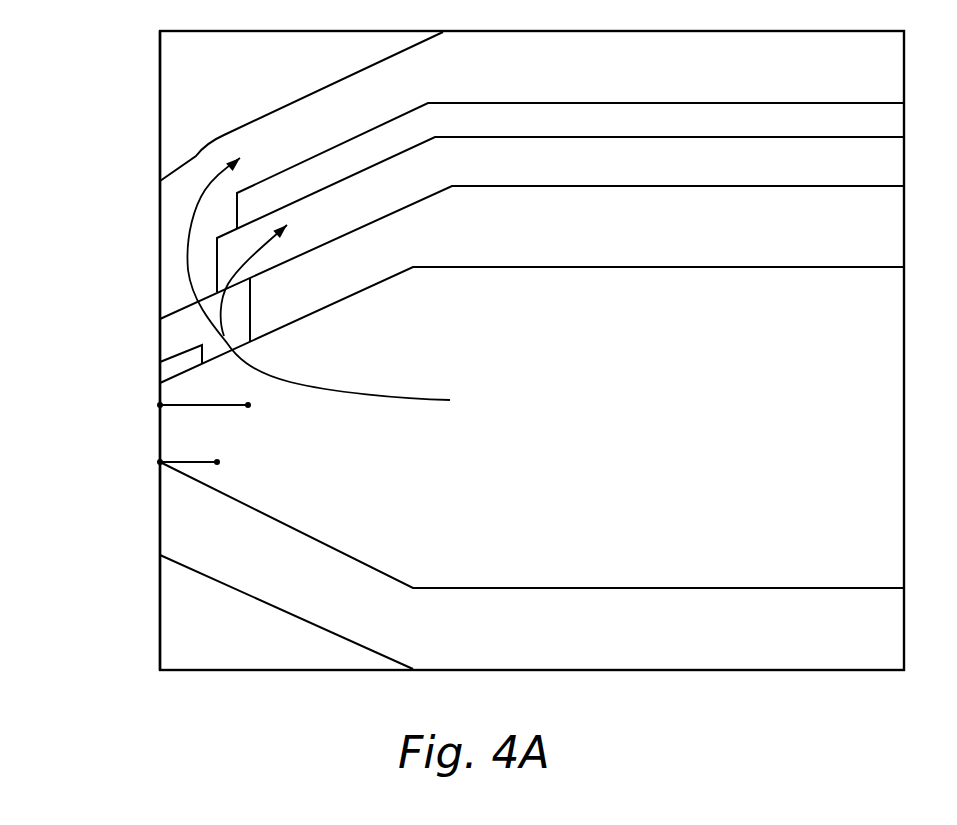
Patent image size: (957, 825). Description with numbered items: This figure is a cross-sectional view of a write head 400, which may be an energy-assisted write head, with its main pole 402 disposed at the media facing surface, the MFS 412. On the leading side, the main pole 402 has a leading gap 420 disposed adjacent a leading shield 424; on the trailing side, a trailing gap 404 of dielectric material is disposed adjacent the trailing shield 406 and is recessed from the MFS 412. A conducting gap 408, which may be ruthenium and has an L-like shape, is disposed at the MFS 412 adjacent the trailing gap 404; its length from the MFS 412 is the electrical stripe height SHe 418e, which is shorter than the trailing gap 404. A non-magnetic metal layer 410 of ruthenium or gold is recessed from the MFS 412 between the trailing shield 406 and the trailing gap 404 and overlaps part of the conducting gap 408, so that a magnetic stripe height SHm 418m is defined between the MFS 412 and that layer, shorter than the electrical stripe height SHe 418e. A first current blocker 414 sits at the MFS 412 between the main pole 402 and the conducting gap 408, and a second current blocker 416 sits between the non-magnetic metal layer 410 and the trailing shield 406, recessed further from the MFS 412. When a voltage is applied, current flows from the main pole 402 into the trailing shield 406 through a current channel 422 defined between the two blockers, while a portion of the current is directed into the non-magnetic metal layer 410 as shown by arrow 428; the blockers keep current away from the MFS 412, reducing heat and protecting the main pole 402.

The write head 400 is at (128, 57).
The main pole 402 is at (858, 435).
The trailing gap 404 is at (858, 242).
The trailing shield 406 is at (858, 83).
The conducting gap 408 is at (170, 333).
The non-magnetic metal layer 410 is at (858, 177).
The media facing surface (MFS) 412 is at (140, 465).
The first current blocker 414 is at (170, 370).
The second current blocker 416 is at (858, 132).
The electrical stripe height SHe 418e is at (205, 405).
The magnetic stripe height SHm 418m is at (188, 462).
The leading gap 420 is at (858, 643).
The current channel 422 is at (187, 246).
The leading shield 424 is at (233, 643).
The arrow 428 is at (257, 248).